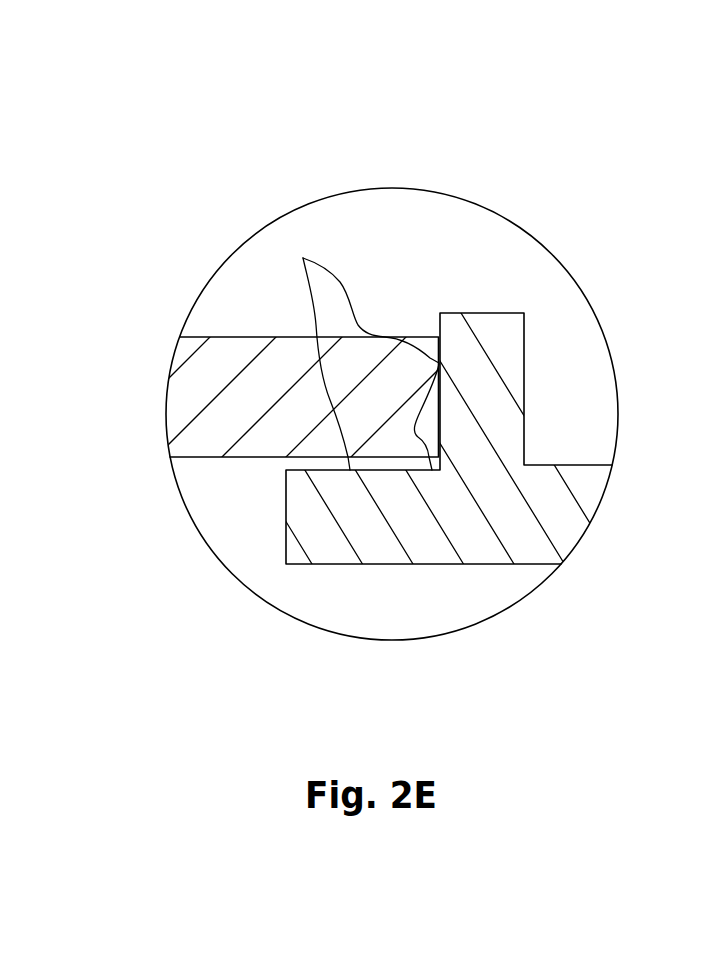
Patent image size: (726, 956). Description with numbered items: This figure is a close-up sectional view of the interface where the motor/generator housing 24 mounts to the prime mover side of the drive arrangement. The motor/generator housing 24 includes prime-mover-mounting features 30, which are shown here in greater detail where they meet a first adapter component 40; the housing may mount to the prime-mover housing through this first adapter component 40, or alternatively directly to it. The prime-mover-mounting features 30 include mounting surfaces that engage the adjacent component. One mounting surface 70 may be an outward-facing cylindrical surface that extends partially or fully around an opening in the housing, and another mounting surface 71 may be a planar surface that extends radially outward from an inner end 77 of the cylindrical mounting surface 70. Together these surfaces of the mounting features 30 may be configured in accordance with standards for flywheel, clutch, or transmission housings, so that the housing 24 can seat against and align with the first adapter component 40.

The motor/generator housing 24 is at (413, 418).
The prime-mover-mounting features 30 is at (303, 258).
The first adapter component 40 is at (280, 306).
The mounting surface 70 is at (325, 470).
The mounting surface 71 is at (437, 318).
The inner end 77 is at (493, 239).